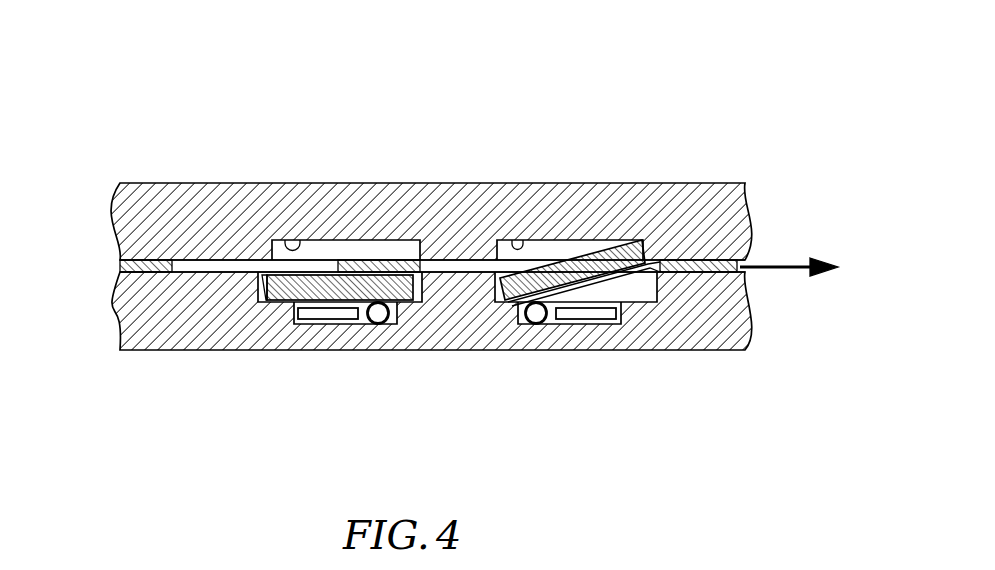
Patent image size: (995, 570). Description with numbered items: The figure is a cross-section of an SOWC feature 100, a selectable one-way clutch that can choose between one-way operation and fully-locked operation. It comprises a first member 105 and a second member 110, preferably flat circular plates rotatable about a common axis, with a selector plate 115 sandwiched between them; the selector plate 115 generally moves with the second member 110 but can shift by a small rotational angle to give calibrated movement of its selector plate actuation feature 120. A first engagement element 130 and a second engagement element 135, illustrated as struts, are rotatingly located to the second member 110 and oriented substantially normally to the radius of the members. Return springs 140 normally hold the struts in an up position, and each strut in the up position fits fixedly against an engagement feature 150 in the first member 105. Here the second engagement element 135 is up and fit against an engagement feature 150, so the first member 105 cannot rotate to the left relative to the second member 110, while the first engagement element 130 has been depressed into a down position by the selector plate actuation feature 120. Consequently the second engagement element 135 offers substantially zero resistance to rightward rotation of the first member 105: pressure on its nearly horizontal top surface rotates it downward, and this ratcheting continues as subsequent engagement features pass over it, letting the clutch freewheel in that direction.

The SOWC feature 100 is at (446, 251).
The first member 105 is at (718, 215).
The second member 110 is at (718, 305).
The selector plate 115 is at (168, 270).
The selector plate actuation feature 120 is at (372, 268).
The first engagement element 130 is at (316, 262).
The second engagement element 135 is at (584, 247).
The return spring 140 is at (375, 331).
The engagement feature 150 is at (288, 243).